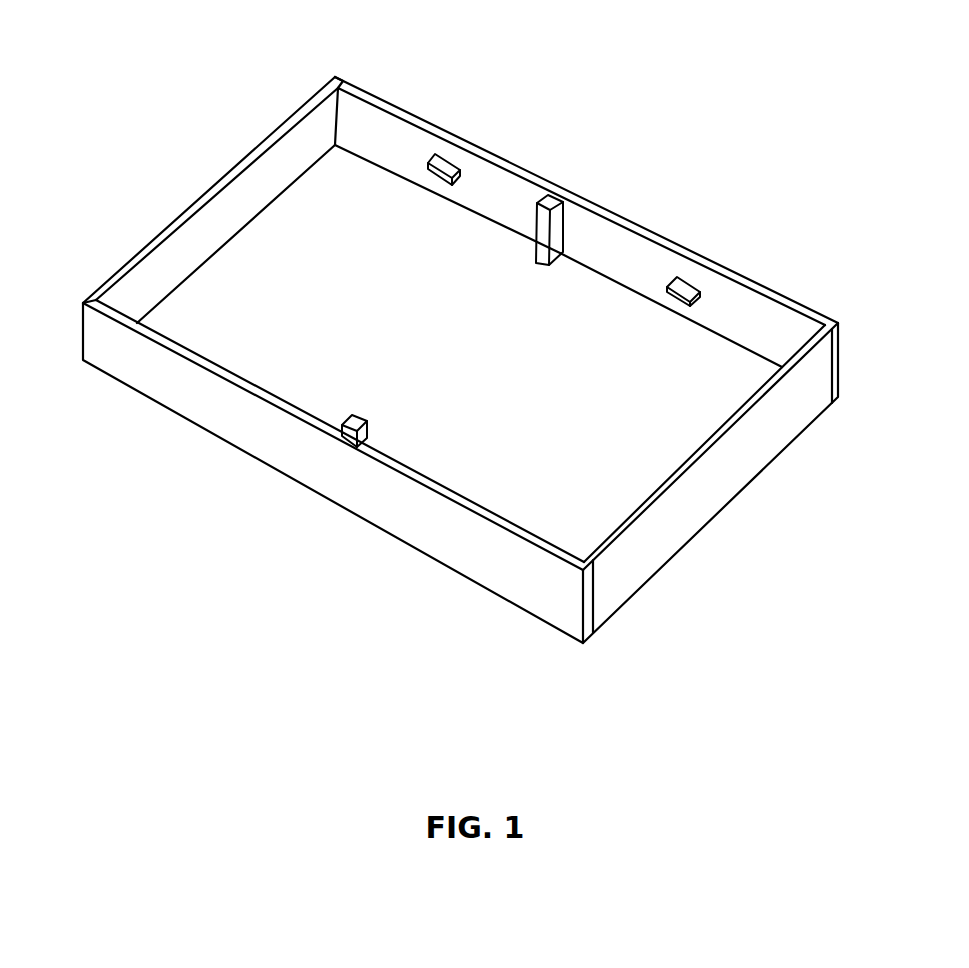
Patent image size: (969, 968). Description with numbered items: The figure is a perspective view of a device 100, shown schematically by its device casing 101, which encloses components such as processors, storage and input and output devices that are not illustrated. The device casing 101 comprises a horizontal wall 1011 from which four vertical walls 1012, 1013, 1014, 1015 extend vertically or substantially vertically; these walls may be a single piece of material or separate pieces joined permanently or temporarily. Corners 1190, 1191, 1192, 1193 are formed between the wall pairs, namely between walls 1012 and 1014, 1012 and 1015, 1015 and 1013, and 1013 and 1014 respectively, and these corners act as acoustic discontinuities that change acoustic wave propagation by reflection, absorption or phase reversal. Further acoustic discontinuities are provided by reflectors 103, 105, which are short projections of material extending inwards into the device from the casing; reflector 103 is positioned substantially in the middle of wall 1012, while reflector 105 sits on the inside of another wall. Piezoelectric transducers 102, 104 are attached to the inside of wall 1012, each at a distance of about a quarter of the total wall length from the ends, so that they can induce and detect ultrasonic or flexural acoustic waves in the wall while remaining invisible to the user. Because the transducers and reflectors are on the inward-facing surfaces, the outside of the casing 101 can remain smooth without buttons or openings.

The device 100 is at (128, 78).
The device casing 101 is at (127, 220).
The horizontal wall 1011 is at (325, 284).
The vertical wall 1012 is at (513, 158).
The vertical wall 1013 is at (92, 343).
The vertical wall 1014 is at (255, 146).
The vertical wall 1015 is at (740, 456).
The corner 1190 is at (343, 87).
The corner 1191 is at (800, 330).
The corner 1192 is at (575, 548).
The corner 1193 is at (147, 322).
The piezoelectric transducer 102 is at (440, 174).
The reflector 103 is at (538, 262).
The piezoelectric transducer 104 is at (677, 297).
The reflector 105 is at (372, 425).